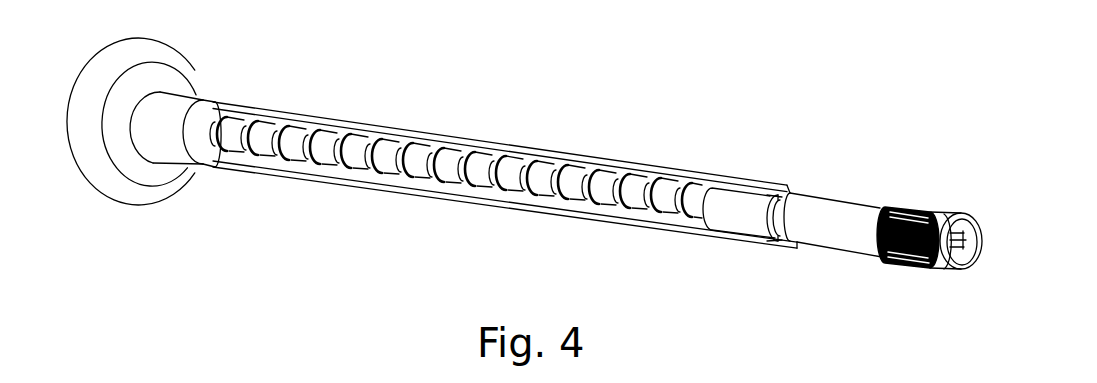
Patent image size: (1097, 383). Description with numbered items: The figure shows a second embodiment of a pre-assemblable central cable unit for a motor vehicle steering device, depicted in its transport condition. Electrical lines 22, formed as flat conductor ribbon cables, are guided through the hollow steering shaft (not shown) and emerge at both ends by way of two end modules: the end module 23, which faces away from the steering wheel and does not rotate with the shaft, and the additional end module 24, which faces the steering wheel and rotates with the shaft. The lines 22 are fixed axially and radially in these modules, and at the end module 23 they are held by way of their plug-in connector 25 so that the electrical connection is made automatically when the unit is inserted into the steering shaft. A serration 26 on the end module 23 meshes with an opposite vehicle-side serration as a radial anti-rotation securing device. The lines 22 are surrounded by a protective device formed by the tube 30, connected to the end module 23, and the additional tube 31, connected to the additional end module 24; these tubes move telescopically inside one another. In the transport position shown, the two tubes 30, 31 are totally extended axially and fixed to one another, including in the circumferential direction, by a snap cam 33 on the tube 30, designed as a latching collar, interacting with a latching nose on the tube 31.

The lines 22 is at (457, 166).
The end module 23 is at (947, 272).
The additional end module 24 is at (153, 175).
The plug-in connector 25 is at (963, 240).
The serration 26 is at (921, 205).
The tube 30 is at (833, 233).
The additional tube 31 is at (392, 189).
The snap cam 33 is at (783, 197).